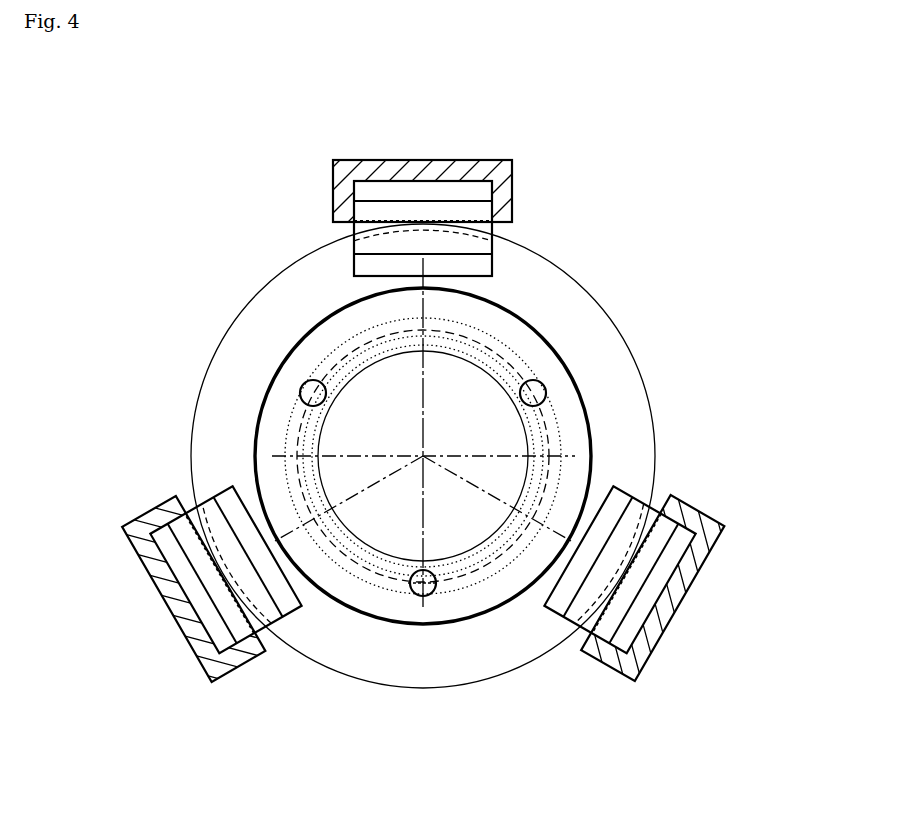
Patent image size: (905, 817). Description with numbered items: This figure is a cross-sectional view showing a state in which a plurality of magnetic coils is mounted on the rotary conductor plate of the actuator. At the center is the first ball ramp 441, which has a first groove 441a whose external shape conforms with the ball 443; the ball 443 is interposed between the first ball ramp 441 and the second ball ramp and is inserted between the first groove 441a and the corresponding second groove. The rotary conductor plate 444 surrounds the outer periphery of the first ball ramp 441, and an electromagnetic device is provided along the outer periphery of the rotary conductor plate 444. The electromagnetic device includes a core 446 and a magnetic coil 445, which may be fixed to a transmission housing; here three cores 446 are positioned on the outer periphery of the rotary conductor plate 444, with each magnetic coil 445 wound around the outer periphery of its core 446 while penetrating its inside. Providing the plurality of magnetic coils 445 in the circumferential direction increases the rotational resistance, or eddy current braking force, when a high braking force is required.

The first ball ramp 441 is at (571, 430).
The first groove 441a is at (405, 596).
The ball 443 is at (541, 375).
The rotary conductor plate 444 is at (584, 316).
The magnetic coil 445 is at (507, 160).
The core 446 is at (475, 265).